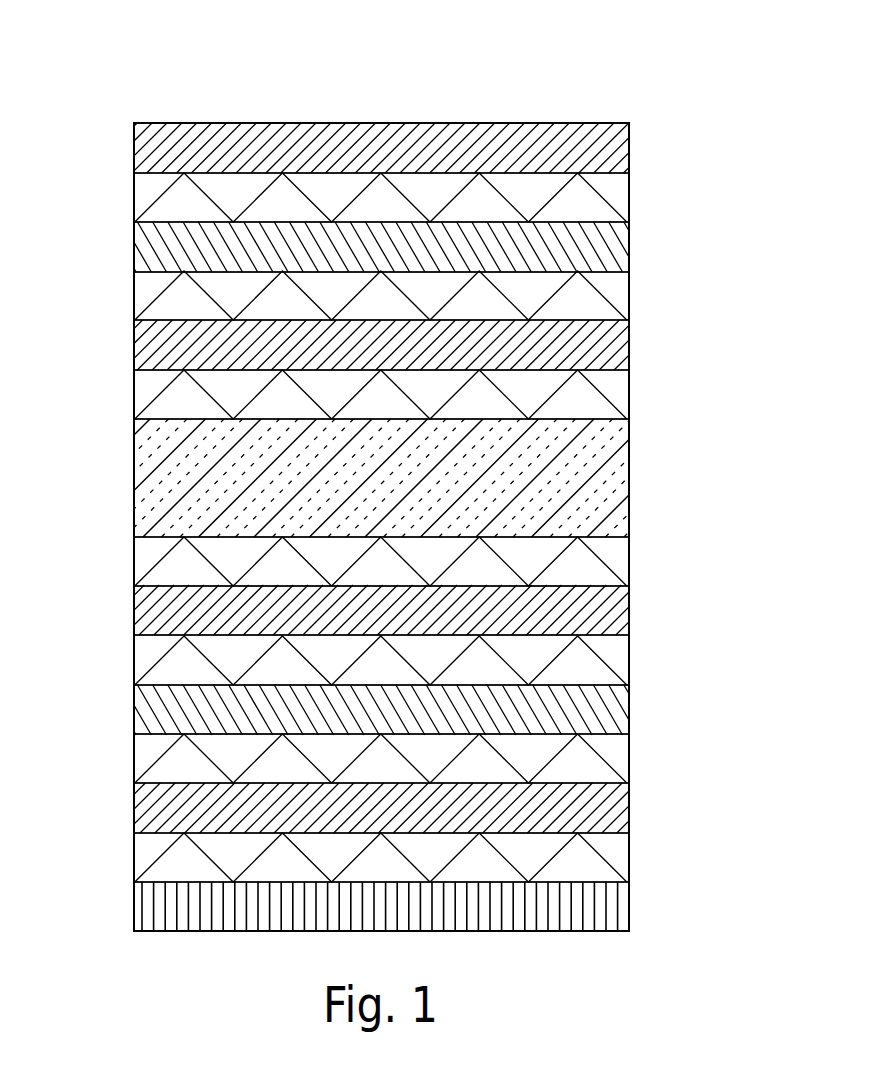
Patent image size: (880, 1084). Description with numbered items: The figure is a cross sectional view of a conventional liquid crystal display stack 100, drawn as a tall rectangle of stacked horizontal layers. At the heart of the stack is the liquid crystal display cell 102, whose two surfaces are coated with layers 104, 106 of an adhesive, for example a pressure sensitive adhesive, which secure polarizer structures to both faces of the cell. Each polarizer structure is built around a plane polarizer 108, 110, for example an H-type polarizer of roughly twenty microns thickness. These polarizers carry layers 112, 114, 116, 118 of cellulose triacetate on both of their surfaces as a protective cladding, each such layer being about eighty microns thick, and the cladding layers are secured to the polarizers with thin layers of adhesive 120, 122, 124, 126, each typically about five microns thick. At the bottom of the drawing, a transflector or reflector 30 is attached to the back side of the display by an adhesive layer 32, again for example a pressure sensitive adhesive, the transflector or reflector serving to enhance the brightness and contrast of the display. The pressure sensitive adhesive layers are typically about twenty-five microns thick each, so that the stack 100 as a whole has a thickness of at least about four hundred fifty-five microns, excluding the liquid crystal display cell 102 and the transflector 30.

The liquid crystal display stack 100 is at (461, 73).
The transflector or reflector 30 is at (629, 908).
The adhesive layer 32 is at (629, 859).
The liquid crystal display cell 102 is at (629, 485).
The adhesive layer 104 is at (629, 392).
The adhesive layer 106 is at (629, 563).
The plane polarizer 108 is at (629, 248).
The plane polarizer 110 is at (629, 712).
The cellulose triacetate layer 112 is at (134, 151).
The cellulose triacetate layer 114 is at (134, 346).
The cellulose triacetate layer 116 is at (134, 612).
The cellulose triacetate layer 118 is at (134, 810).
The adhesive layer 120 is at (629, 198).
The adhesive layer 122 is at (629, 297).
The adhesive layer 124 is at (629, 662).
The adhesive layer 126 is at (629, 757).